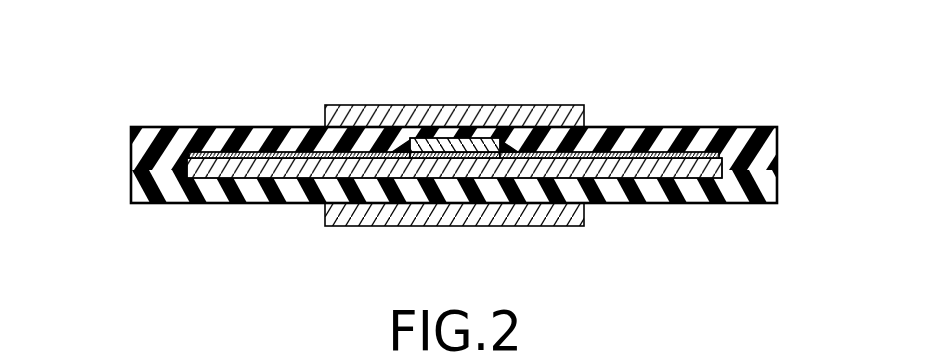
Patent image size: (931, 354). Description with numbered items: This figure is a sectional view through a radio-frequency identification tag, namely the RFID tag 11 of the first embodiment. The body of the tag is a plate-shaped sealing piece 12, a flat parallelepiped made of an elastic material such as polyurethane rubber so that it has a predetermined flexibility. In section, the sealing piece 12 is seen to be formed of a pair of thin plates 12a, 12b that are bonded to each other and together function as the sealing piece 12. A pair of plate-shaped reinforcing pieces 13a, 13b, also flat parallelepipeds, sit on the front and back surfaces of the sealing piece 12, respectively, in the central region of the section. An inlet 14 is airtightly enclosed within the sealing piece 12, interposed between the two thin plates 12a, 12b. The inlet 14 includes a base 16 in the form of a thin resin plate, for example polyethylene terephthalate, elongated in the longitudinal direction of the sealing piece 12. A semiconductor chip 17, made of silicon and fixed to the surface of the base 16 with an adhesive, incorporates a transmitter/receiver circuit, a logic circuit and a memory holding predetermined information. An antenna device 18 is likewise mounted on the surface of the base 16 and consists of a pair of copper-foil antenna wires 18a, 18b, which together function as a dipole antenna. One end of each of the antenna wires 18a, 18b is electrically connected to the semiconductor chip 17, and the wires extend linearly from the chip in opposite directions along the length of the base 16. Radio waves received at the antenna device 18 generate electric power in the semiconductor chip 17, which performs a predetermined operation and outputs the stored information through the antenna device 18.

The RFID tag 11 is at (452, 140).
The sealing piece 12 is at (452, 143).
The thin plate 12a is at (151, 127).
The thin plate 12b is at (188, 199).
The reinforcing piece 13a is at (365, 108).
The reinforcing piece 13b is at (388, 216).
The inlet 14 is at (493, 136).
The base 16 is at (694, 169).
The semiconductor chip 17 is at (450, 145).
The antenna device 18 is at (468, 157).
The antenna wire 18a is at (255, 160).
The antenna wire 18b is at (704, 152).